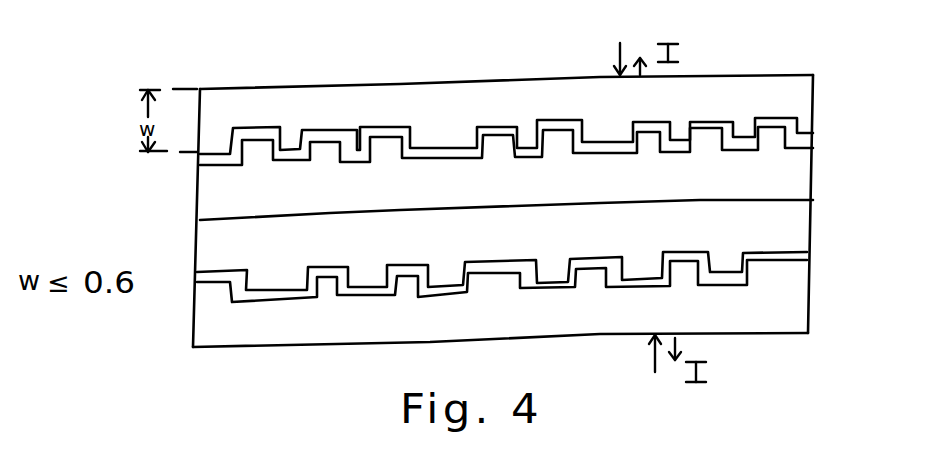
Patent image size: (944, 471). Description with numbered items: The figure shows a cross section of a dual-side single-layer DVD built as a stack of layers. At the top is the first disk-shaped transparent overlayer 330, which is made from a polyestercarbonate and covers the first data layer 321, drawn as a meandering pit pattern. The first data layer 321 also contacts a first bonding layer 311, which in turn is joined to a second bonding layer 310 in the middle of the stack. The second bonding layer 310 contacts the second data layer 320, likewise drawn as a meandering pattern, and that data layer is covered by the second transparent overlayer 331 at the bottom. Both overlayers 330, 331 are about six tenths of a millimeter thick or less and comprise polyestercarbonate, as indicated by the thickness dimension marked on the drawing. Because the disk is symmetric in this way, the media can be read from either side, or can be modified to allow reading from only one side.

The first disk-shaped transparent overlayer 330 is at (813, 92).
The first data layer 321 is at (813, 137).
The first bonding layer 311 is at (807, 172).
The second bonding layer 310 is at (805, 217).
The second data layer 320 is at (805, 255).
The second transparent overlayer 331 is at (798, 298).